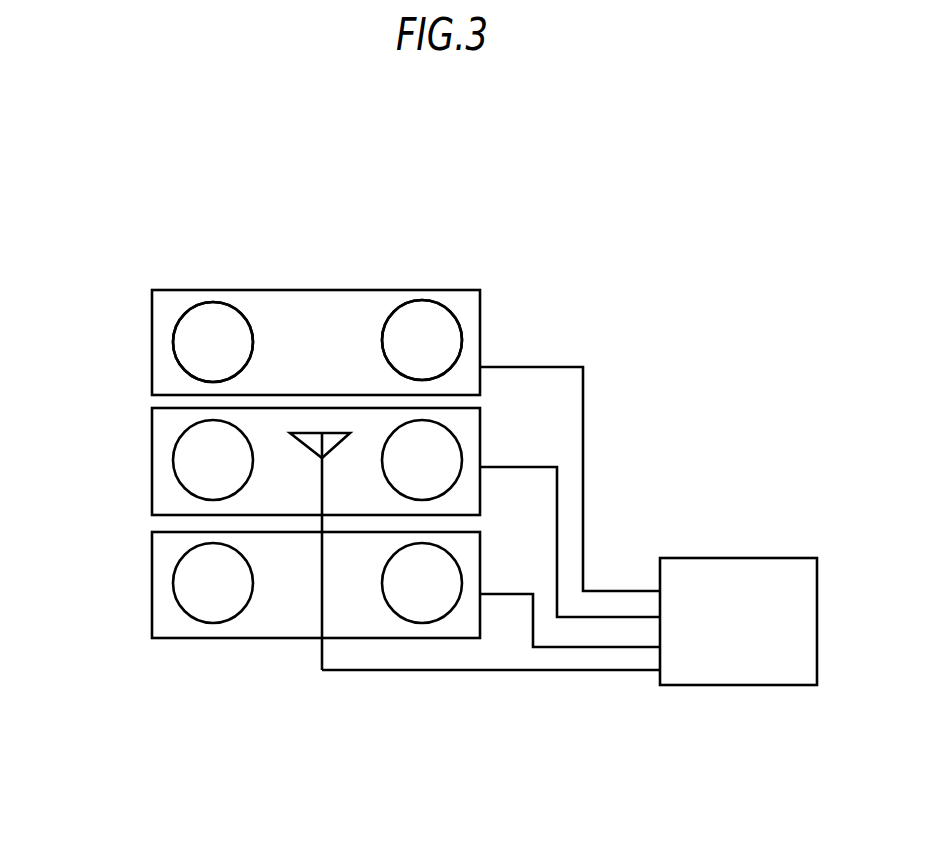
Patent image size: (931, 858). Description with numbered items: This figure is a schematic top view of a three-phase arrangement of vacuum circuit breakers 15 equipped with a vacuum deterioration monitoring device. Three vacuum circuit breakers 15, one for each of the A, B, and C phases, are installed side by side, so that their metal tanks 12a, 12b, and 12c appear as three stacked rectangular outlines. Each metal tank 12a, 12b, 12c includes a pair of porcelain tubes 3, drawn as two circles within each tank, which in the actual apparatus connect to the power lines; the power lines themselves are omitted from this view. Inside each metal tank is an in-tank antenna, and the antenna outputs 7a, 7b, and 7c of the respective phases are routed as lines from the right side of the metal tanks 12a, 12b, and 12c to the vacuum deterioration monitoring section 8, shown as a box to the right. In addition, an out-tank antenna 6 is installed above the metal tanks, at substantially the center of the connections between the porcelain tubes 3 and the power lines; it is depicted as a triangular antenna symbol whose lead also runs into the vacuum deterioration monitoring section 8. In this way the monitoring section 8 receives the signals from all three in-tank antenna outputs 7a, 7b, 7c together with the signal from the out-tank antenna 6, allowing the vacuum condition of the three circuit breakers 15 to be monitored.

The porcelain tube 3 is at (207, 302).
The out-tank antenna 6 is at (335, 432).
The antenna output 7a is at (558, 367).
The antenna output 7b is at (534, 466).
The antenna output 7c is at (513, 595).
The vacuum deterioration monitoring section 8 is at (727, 558).
The metal tank 12a is at (152, 350).
The metal tank 12b is at (152, 473).
The metal tank 12c is at (152, 608).
The vacuum circuit breaker 15 is at (204, 650).